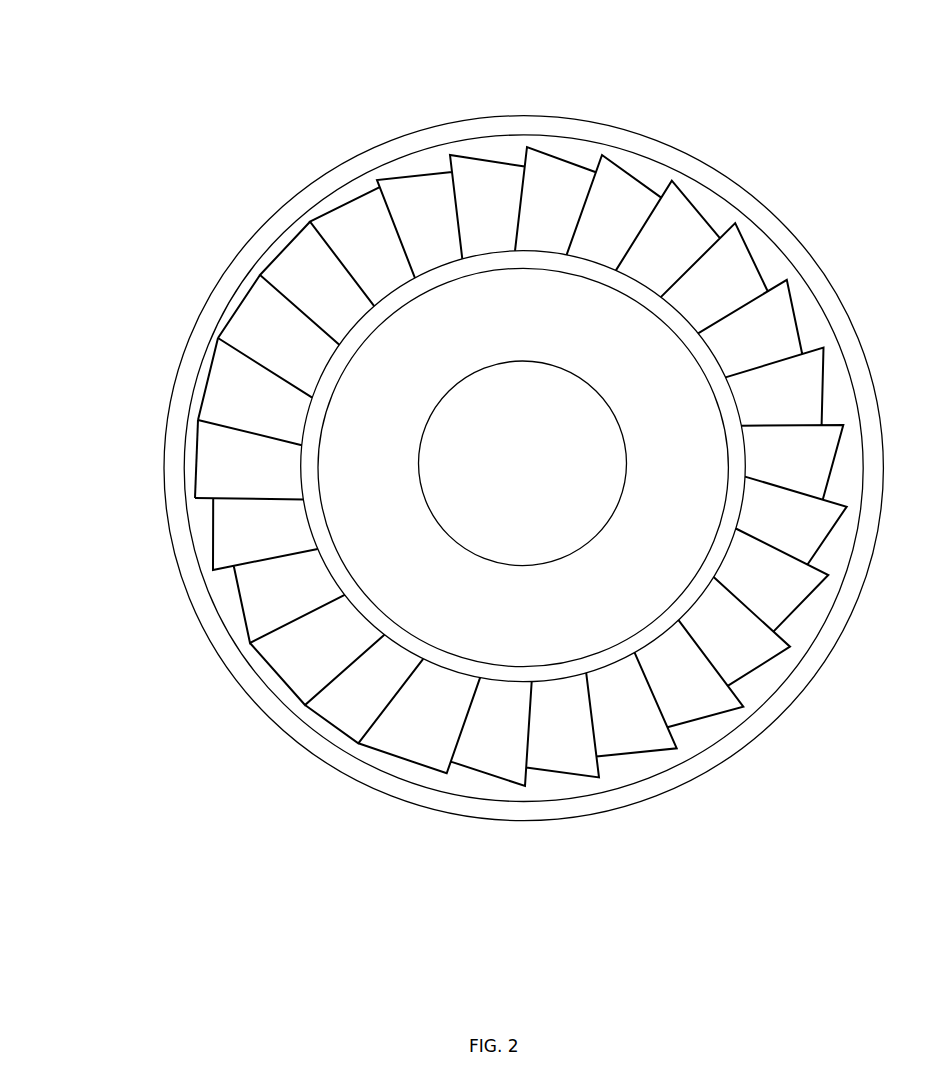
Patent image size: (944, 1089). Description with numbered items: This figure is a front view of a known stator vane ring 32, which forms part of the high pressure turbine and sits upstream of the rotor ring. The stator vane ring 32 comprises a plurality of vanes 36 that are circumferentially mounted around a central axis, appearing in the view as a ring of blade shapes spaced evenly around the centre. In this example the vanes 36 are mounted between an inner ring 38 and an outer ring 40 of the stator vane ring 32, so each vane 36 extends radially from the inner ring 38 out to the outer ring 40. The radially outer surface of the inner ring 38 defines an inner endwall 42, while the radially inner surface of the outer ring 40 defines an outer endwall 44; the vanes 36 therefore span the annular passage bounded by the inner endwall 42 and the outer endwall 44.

The stator vane ring 32 is at (736, 131).
The vane 36 is at (270, 603).
The inner ring 38 is at (332, 374).
The outer ring 40 is at (273, 226).
The inner endwall 42 is at (303, 420).
The outer endwall 44 is at (198, 436).